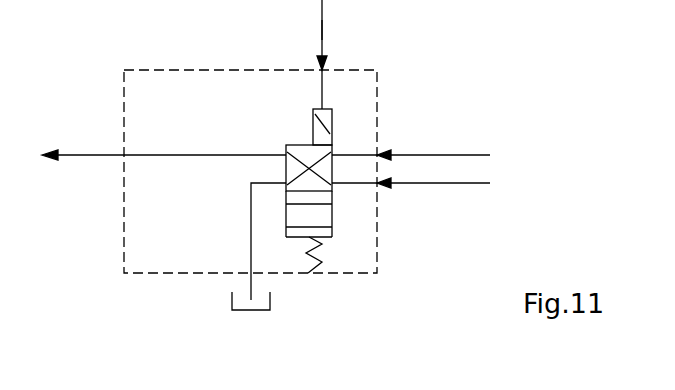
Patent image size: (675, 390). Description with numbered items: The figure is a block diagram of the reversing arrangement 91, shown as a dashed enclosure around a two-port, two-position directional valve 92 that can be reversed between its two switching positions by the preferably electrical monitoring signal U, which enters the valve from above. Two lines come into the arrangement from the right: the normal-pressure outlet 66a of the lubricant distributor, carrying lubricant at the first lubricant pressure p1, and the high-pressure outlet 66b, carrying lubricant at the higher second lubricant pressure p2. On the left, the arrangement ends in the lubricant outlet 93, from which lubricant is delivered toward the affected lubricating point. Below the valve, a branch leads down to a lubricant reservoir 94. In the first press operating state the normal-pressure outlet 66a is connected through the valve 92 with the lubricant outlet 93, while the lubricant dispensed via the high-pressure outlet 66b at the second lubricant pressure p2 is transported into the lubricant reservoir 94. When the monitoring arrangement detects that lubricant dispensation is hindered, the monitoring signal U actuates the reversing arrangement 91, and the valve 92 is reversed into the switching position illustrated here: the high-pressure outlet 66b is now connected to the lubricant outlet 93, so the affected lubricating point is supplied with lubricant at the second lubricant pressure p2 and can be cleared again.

The reversing arrangement 91 is at (183, 68).
The 2/2-way valve 92 is at (291, 145).
The lubricant outlet 93 is at (84, 155).
The lubricant reservoir 94 is at (258, 310).
The normal-pressure outlet 66a is at (431, 156).
The high-pressure outlet 66b is at (431, 183).
The monitoring signal U is at (322, 27).
The first lubricant pressure p1 is at (422, 141).
The second lubricant pressure p2 is at (422, 171).